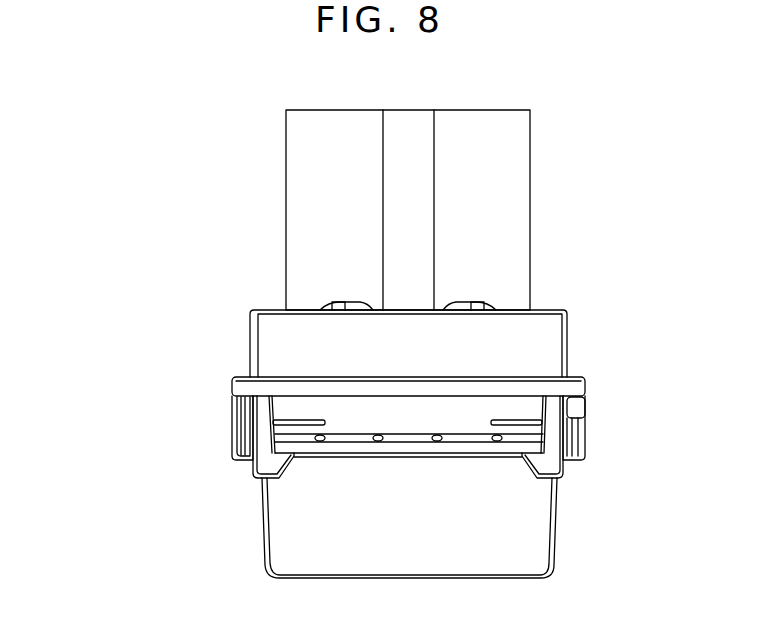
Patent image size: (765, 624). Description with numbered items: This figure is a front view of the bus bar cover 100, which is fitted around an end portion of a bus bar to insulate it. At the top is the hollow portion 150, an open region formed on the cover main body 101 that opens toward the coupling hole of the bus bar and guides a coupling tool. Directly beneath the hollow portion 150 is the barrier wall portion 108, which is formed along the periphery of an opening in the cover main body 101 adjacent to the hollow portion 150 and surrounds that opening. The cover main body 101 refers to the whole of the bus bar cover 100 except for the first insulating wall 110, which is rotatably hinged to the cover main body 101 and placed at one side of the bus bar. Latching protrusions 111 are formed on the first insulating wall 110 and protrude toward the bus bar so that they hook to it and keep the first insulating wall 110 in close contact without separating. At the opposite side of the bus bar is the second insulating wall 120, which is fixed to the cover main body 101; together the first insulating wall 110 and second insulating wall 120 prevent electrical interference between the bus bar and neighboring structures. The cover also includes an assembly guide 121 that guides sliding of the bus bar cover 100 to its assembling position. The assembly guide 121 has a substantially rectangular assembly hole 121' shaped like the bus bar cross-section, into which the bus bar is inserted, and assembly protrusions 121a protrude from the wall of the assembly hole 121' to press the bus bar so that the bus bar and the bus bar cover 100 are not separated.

The bus bar cover 100 is at (175, 170).
The hollow portion 150 is at (517, 160).
The barrier wall portion 108 is at (548, 335).
The cover main body 101 is at (233, 385).
The first insulating wall 110 is at (572, 388).
The assembly guide 121 is at (198, 432).
The assembly hole 121' is at (248, 418).
The assembly protrusion 121a is at (497, 438).
The latching protrusion 111 is at (553, 467).
The second insulating wall 120 is at (263, 512).